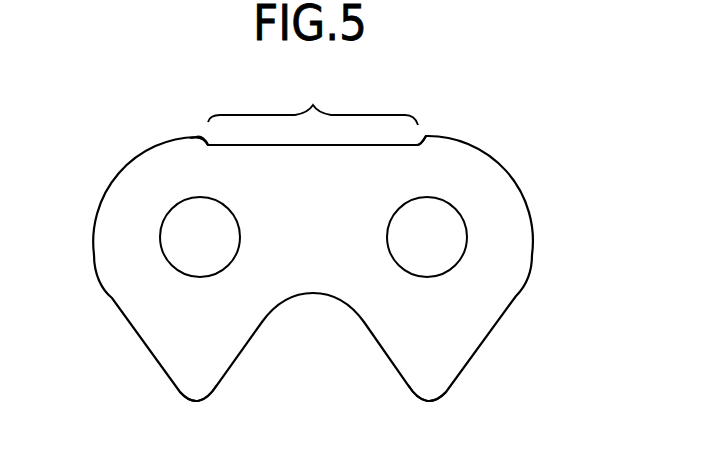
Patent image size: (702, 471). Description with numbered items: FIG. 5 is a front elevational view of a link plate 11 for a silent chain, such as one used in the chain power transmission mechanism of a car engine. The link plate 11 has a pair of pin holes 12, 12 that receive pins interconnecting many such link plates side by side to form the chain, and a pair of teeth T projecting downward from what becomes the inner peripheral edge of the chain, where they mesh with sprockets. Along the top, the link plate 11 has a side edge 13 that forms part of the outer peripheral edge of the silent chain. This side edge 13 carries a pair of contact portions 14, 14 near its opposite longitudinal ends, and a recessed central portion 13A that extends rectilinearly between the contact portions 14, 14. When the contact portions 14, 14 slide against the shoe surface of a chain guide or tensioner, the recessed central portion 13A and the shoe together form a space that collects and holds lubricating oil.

The link plate 11 is at (473, 133).
The pin hole 12 is at (158, 237).
The side edge 13 is at (328, 148).
The recessed central portion 13A is at (313, 100).
The contact portion 14 is at (193, 150).
The tooth T is at (200, 395).